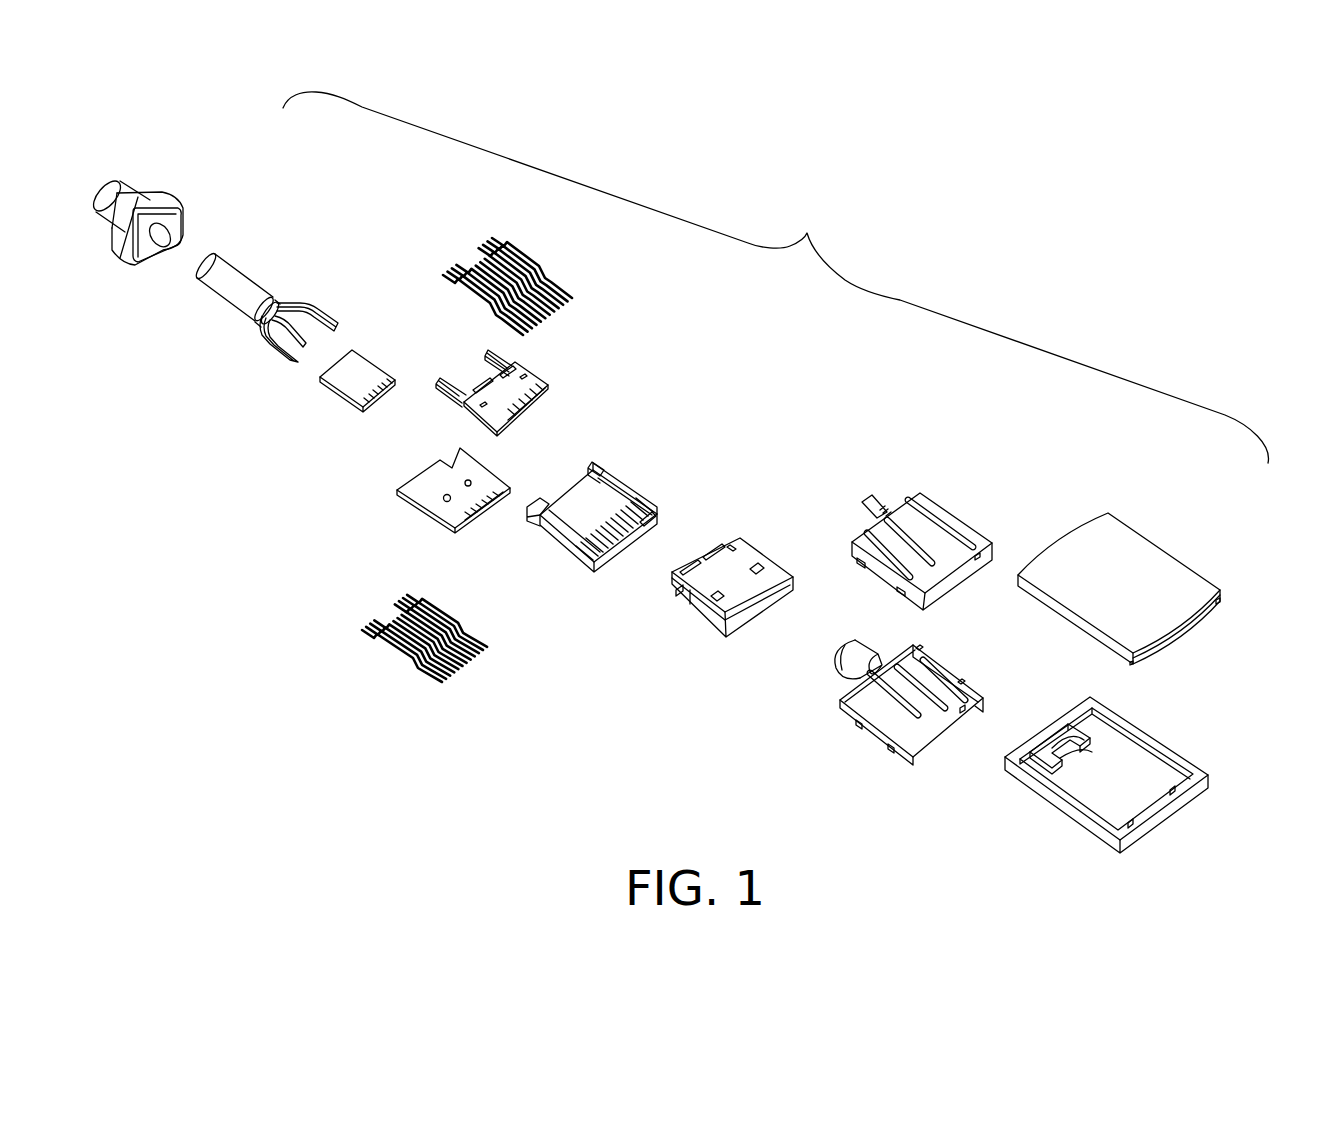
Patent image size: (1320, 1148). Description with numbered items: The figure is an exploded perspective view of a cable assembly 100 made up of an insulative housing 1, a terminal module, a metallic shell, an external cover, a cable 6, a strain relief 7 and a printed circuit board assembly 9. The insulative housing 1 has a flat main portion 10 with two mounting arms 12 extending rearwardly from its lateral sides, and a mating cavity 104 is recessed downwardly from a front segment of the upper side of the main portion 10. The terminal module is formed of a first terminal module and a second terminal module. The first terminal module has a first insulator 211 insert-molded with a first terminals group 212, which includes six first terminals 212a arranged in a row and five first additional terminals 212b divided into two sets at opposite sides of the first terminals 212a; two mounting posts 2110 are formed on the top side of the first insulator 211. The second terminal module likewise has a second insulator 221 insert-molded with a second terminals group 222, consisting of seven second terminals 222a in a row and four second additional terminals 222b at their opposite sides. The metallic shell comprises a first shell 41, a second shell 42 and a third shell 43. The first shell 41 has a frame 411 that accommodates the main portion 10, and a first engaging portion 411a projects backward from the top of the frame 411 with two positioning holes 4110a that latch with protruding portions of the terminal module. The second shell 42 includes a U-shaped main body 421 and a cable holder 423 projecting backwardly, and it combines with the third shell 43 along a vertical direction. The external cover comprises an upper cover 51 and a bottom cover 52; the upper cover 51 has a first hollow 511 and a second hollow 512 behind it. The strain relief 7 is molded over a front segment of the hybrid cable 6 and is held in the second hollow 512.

The cable assembly 100 is at (775, 277).
The strain relief 7 is at (185, 188).
The cable 6 is at (274, 274).
The printed circuit board assembly 9 is at (385, 352).
The second terminals group 222 is at (554, 274).
The second terminals 222a is at (548, 314).
The second additional terminals 222b is at (540, 272).
The second insulator 221 is at (540, 365).
The first insulator 211 is at (468, 479).
The mounting posts 2110 is at (443, 496).
The insulative housing 1 is at (615, 506).
The main portion 10 is at (573, 530).
The mounting arms 12 is at (540, 507).
The mating cavity 104 is at (648, 527).
The first terminals group 212 is at (476, 659).
The first terminals 212a is at (465, 665).
The first additional terminals 212b is at (470, 637).
The first shell 41 is at (731, 572).
The frame 411 is at (745, 555).
The first engaging portion 411a is at (722, 537).
The positioning holes 4110a is at (675, 578).
The third shell 43 is at (965, 503).
The second shell 42 is at (892, 692).
The cable holder 423 is at (843, 665).
The main body 421 is at (862, 713).
The bottom cover 52 is at (1160, 530).
The upper cover 51 is at (1131, 762).
The first hollow 511 is at (1145, 782).
The second hollow 512 is at (1080, 745).